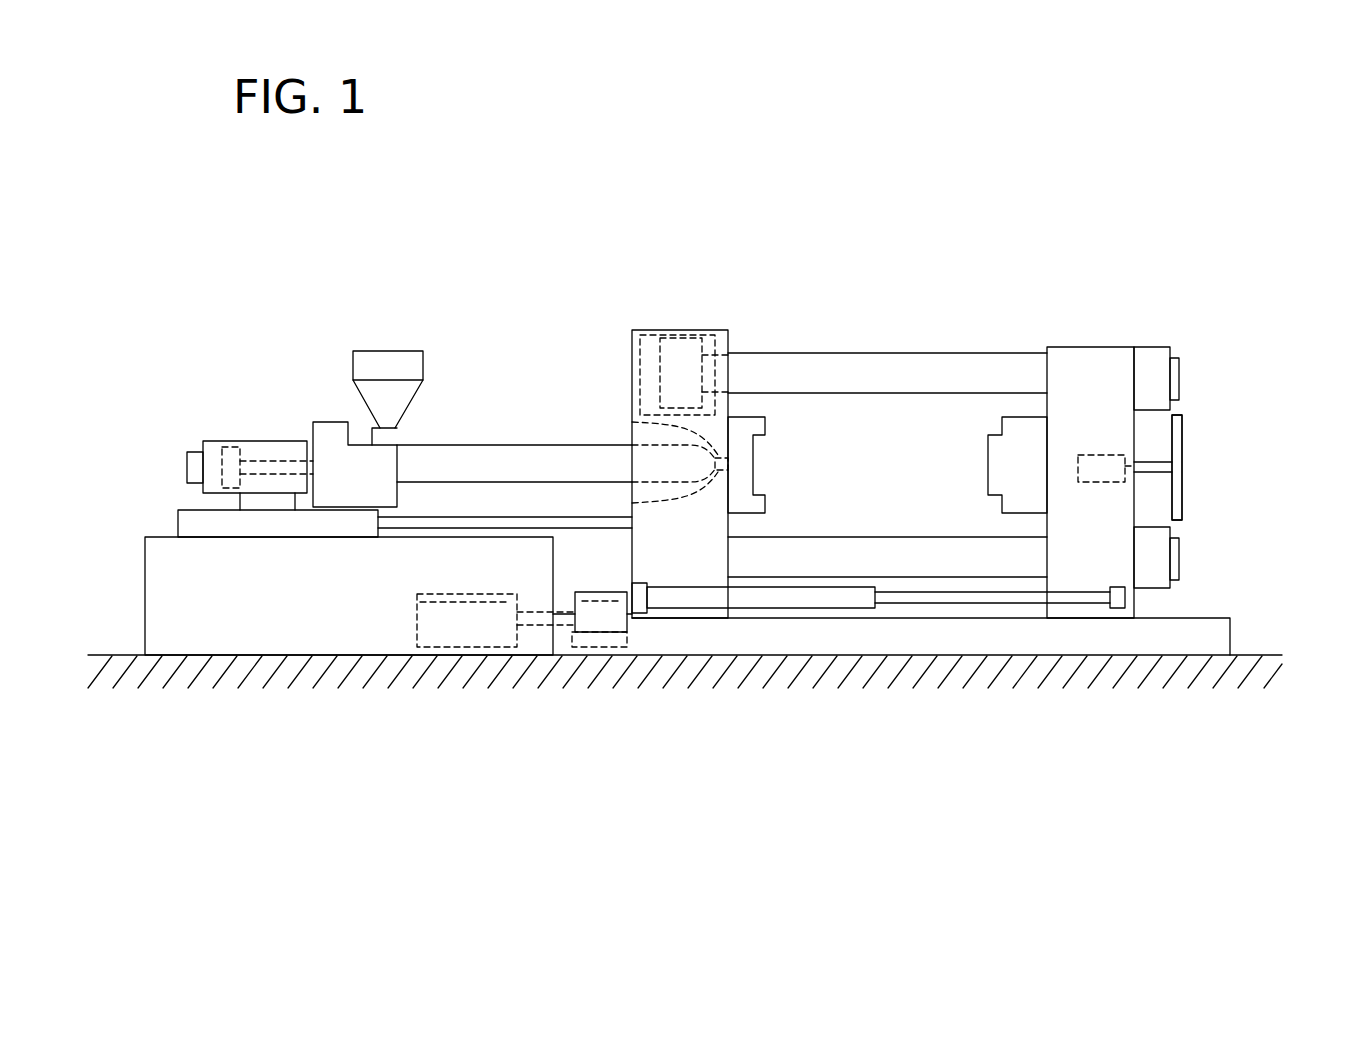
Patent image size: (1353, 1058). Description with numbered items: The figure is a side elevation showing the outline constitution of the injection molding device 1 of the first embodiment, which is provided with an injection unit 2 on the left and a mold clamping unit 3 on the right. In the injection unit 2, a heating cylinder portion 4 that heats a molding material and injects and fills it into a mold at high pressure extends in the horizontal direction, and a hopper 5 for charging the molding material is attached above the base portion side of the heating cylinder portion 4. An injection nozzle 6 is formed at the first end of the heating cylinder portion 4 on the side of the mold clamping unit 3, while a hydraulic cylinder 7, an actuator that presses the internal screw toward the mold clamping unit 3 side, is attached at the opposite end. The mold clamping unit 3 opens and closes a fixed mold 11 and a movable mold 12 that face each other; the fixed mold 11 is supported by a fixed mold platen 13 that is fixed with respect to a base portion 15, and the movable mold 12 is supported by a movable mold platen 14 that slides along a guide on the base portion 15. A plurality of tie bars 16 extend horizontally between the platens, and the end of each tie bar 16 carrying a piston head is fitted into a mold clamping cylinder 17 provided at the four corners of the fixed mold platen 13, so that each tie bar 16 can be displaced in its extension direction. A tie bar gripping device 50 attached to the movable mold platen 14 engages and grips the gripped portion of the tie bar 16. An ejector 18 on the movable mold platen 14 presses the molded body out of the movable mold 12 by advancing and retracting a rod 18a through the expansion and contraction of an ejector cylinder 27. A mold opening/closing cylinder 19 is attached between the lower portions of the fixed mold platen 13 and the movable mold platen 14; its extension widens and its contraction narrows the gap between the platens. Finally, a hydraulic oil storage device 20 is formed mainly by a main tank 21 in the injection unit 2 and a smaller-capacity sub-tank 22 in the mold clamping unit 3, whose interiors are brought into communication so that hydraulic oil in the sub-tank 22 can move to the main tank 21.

The injection molding device 1 is at (781, 156).
The injection unit 2 is at (388, 342).
The mold clamping unit 3 is at (940, 338).
The heating cylinder portion 4 is at (491, 462).
The hopper 5 is at (352, 360).
The injection nozzle 6 is at (722, 455).
The hydraulic cylinder 7 is at (255, 441).
The fixed mold 11 is at (765, 425).
The movable mold 12 is at (1025, 428).
The fixed mold platen 13 is at (672, 330).
The movable mold platen 14 is at (1090, 347).
The base portion 15 is at (705, 635).
The tie bar 16 is at (875, 353).
The mold clamping cylinder 17 is at (632, 372).
The ejector 18 is at (1177, 467).
The rod 18a is at (1150, 467).
The mold opening/closing cylinder 19 is at (830, 600).
The hydraulic oil storage device 20 is at (408, 626).
The main tank 21 is at (460, 630).
The sub-tank 22 is at (597, 640).
The ejector cylinder 27 is at (1098, 480).
The tie bar gripping device 50 is at (1157, 378).